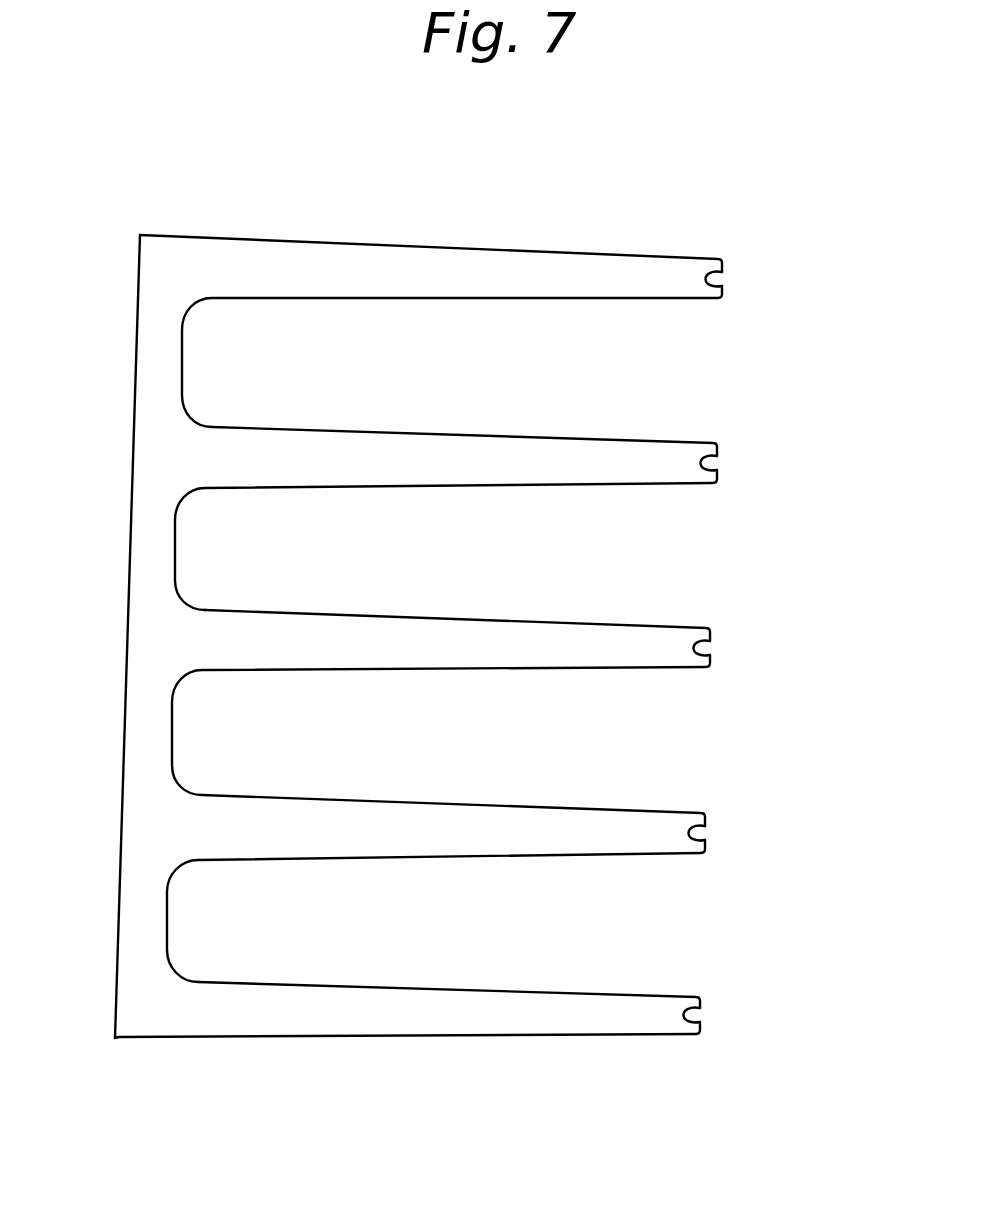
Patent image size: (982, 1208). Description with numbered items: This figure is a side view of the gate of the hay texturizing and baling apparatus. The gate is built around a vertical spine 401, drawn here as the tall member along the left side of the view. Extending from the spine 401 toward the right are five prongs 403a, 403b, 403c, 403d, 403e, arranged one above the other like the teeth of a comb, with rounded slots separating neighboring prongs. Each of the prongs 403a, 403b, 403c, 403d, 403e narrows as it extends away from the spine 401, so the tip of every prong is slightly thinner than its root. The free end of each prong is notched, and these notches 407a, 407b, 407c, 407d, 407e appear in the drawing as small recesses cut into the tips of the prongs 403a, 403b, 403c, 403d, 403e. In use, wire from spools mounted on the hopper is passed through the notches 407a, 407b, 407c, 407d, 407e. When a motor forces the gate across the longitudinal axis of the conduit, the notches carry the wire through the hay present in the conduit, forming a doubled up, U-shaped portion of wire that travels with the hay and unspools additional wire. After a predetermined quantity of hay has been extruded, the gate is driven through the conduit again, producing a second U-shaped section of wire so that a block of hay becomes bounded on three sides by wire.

The vertical spine 401 is at (165, 643).
The prong 403a is at (477, 278).
The prong 403b is at (515, 417).
The prong 403c is at (513, 592).
The prong 403d is at (488, 777).
The prong 403e is at (485, 963).
The notch at finger tip 407a is at (727, 283).
The notch at finger tip 407b is at (722, 466).
The notch at finger tip 407c is at (778, 648).
The notch at finger tip 407d is at (710, 835).
The notch at finger tip 407e is at (705, 1015).